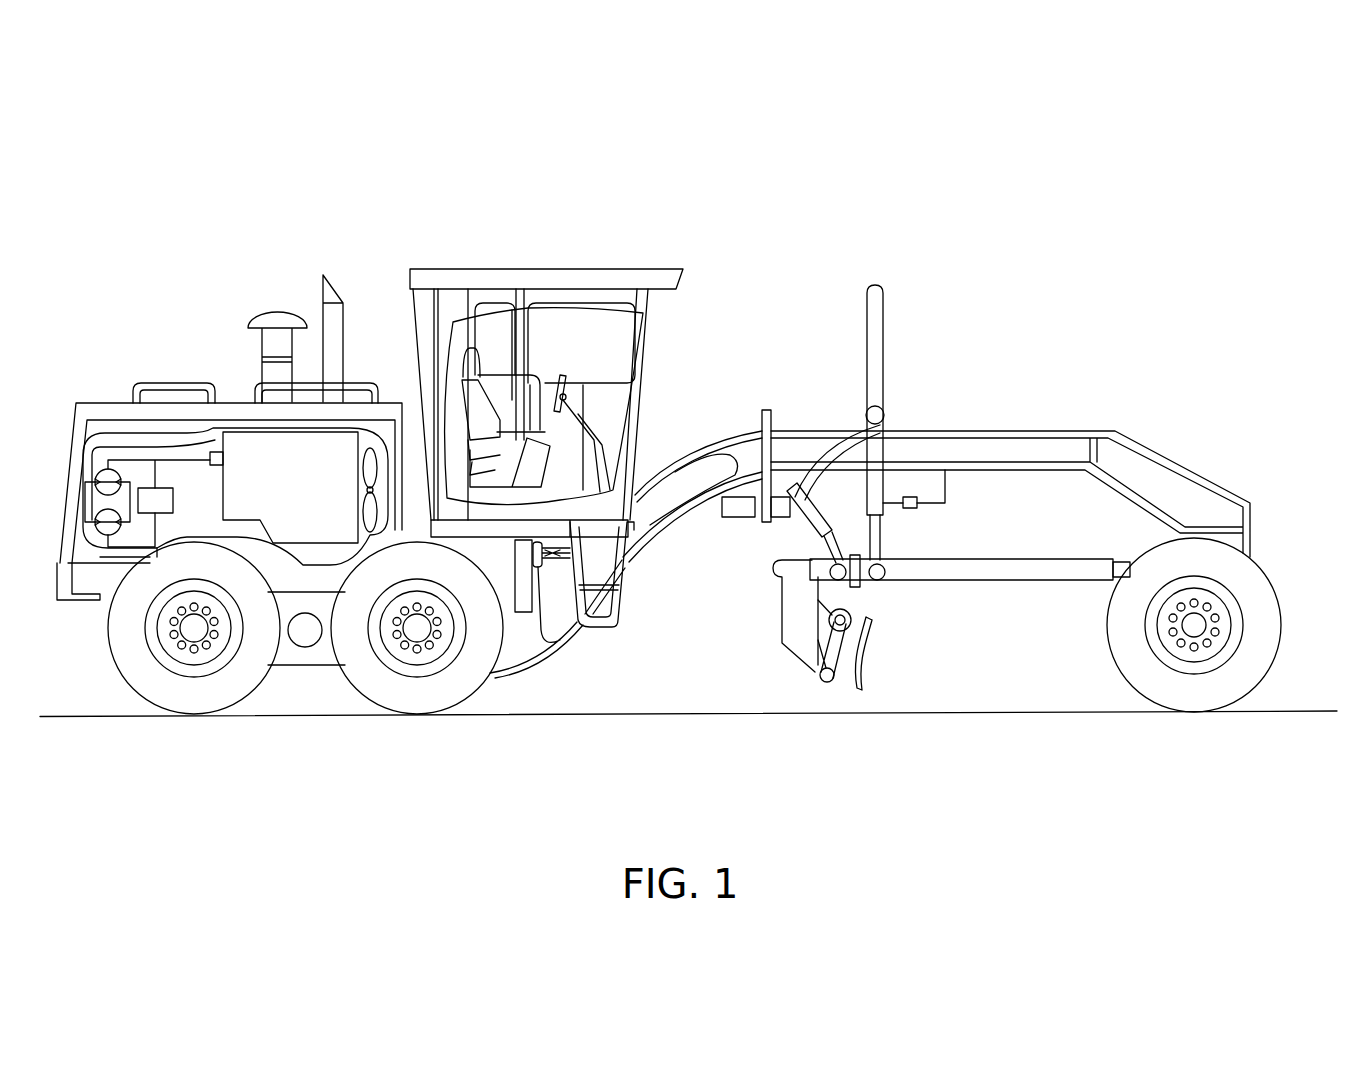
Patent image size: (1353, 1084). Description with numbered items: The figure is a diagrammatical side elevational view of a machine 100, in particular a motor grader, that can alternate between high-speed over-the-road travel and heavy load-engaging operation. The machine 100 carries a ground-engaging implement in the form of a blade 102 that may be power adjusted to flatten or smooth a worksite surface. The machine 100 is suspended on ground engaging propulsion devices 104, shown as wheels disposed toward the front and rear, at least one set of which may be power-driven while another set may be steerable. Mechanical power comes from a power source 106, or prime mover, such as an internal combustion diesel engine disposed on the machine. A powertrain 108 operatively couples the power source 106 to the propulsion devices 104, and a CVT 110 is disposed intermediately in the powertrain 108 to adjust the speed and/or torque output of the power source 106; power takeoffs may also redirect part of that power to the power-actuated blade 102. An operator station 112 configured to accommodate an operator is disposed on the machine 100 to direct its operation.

The machine 100 is at (715, 267).
The blade 102 is at (858, 648).
The propulsion devices 104 is at (210, 690).
The power source 106 is at (265, 455).
The powertrain 108 is at (157, 448).
The CVT 110 is at (85, 495).
The operator station 112 is at (527, 278).